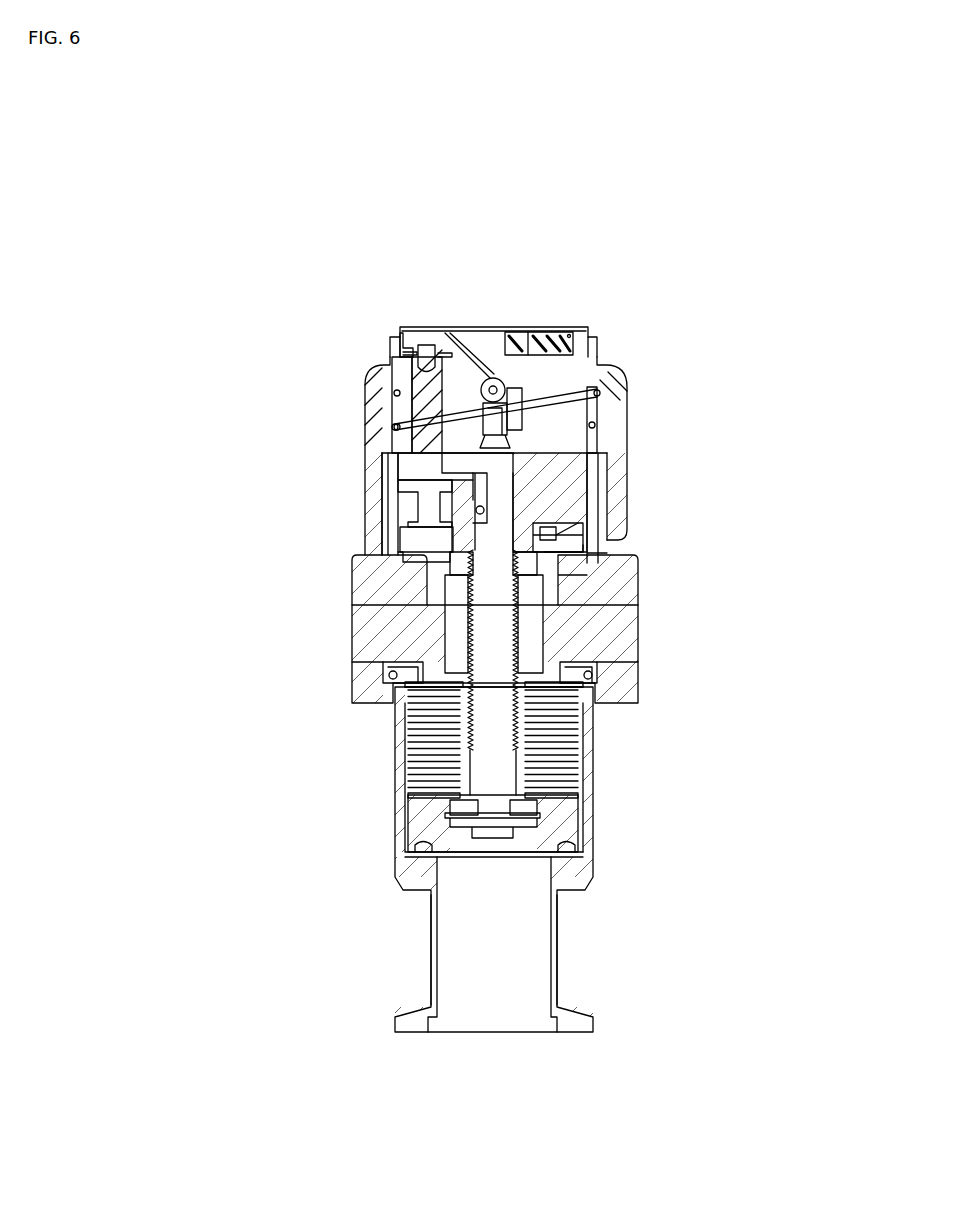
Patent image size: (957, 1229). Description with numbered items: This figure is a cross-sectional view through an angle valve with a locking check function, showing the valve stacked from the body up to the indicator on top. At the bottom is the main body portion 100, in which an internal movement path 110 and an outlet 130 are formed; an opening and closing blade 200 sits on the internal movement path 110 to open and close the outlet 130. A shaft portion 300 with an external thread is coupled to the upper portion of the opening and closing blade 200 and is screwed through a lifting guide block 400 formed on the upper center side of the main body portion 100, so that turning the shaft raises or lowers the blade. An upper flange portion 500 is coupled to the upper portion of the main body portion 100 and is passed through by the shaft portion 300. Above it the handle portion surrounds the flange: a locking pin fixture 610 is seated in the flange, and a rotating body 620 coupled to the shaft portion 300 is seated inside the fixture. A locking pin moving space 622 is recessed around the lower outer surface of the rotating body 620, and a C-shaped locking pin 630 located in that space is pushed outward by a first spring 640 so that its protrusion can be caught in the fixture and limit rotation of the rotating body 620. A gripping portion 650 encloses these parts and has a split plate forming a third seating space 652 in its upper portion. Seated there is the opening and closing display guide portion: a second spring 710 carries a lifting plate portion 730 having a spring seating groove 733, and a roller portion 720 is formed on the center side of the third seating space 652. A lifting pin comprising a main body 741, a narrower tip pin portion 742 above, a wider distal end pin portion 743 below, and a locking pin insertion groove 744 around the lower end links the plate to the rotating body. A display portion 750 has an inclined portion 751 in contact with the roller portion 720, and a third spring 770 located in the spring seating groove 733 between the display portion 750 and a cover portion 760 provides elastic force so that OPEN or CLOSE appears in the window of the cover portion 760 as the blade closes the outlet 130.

The main body portion 100 is at (590, 815).
The internal movement path 110 is at (590, 752).
The outlet 130 is at (431, 953).
The opening and closing blade 200 is at (427, 826).
The shaft portion 300 is at (493, 712).
The lifting guide block 400 is at (455, 635).
The upper flange portion 500 is at (375, 588).
The locking pin fixture 610 is at (575, 472).
The rotating body 620 is at (578, 502).
The locking pin moving space 622 is at (425, 540).
The locking pin 630 is at (565, 530).
The first spring 640 is at (553, 545).
The gripping portion 650 is at (620, 455).
The third seating space 652 is at (598, 432).
The second spring 710 is at (583, 414).
The roller portion 720 is at (600, 392).
The lifting plate portion 730 is at (603, 360).
The spring seating groove 733 is at (572, 335).
The main body 741 is at (420, 415).
The tip pin portion 742 is at (395, 362).
The distal end pin portion 743 is at (428, 468).
The locking pin insertion groove 744 is at (420, 504).
The display portion 750 is at (493, 378).
The inclined portion 751 is at (478, 345).
The cover portion 760 is at (433, 352).
The third spring 770 is at (530, 340).